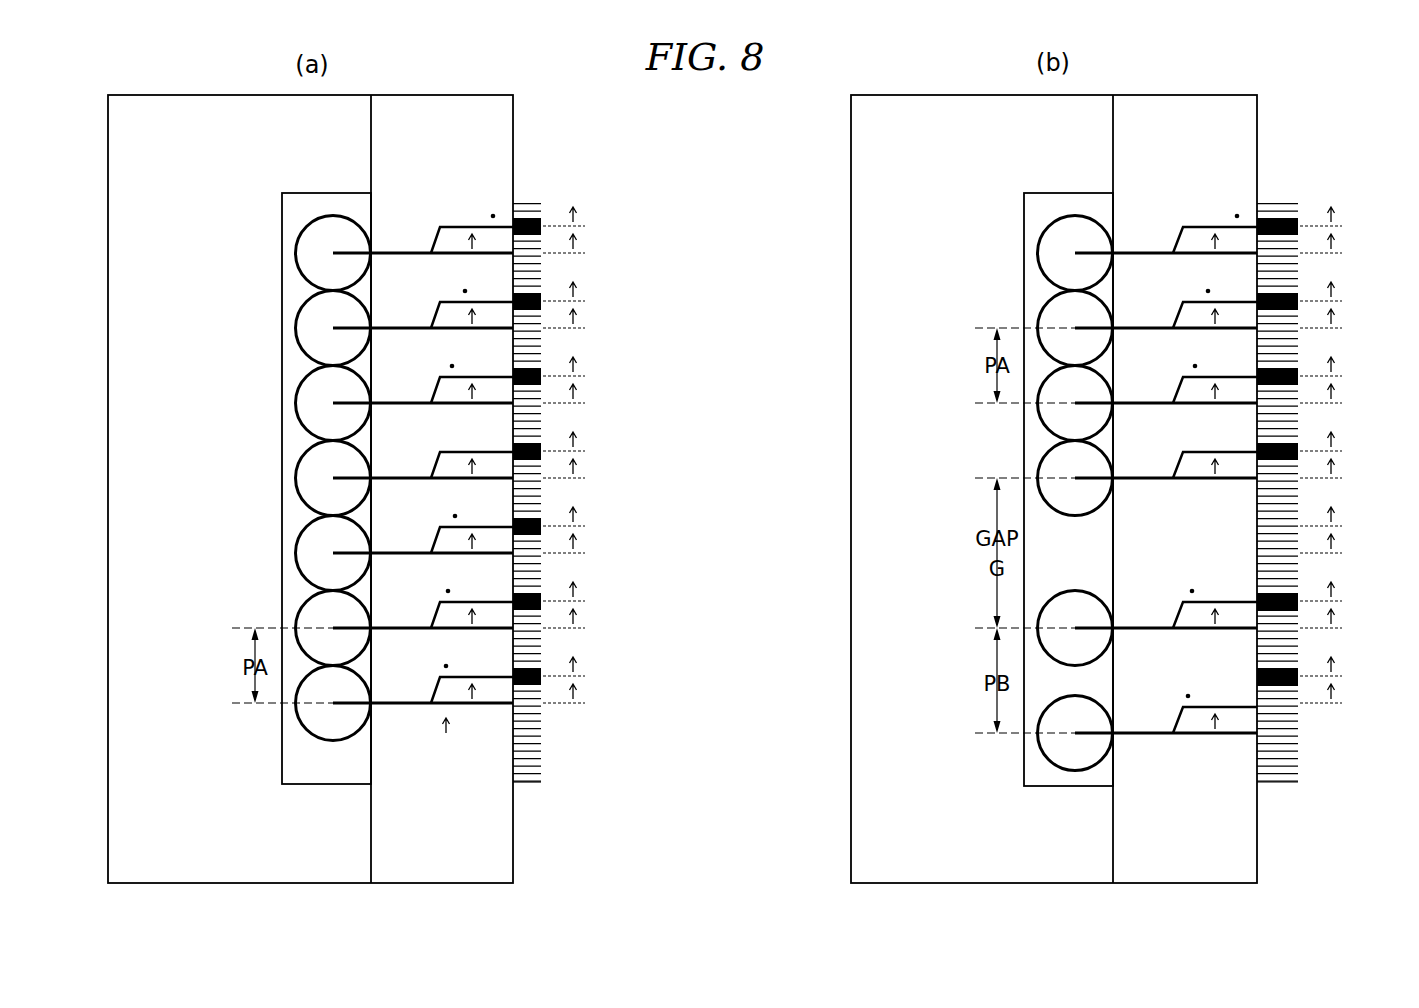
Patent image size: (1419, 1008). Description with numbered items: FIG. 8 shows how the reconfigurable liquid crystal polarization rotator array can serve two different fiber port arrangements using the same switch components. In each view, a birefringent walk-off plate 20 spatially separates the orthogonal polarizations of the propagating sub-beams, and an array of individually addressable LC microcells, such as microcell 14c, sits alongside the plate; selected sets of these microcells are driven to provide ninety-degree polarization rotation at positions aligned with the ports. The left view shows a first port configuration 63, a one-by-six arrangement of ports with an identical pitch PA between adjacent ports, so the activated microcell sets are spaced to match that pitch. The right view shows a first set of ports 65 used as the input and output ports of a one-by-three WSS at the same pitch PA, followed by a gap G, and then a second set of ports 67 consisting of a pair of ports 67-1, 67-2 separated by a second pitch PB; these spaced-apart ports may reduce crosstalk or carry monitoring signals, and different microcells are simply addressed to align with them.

The birefringent walk-off plate 20 is at (498, 123).
The first port configuration 63 is at (282, 432).
The third nozzle 14c is at (525, 375).
The first set of ports 65 is at (1070, 187).
The second set of ports 67 is at (1078, 512).
The port 67-1 is at (1087, 603).
The port 67-2 is at (1093, 752).